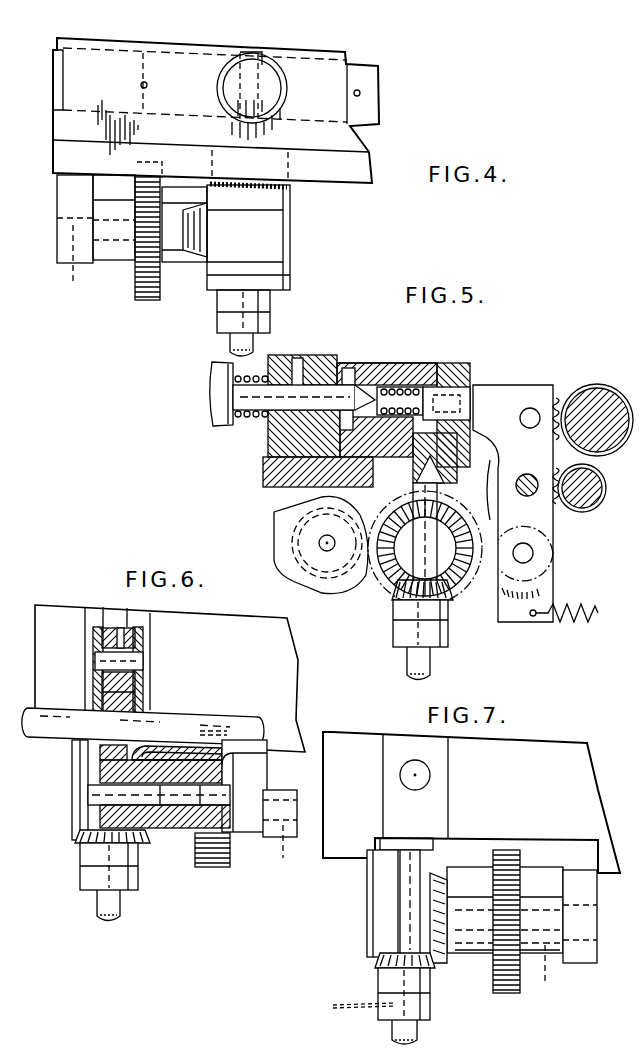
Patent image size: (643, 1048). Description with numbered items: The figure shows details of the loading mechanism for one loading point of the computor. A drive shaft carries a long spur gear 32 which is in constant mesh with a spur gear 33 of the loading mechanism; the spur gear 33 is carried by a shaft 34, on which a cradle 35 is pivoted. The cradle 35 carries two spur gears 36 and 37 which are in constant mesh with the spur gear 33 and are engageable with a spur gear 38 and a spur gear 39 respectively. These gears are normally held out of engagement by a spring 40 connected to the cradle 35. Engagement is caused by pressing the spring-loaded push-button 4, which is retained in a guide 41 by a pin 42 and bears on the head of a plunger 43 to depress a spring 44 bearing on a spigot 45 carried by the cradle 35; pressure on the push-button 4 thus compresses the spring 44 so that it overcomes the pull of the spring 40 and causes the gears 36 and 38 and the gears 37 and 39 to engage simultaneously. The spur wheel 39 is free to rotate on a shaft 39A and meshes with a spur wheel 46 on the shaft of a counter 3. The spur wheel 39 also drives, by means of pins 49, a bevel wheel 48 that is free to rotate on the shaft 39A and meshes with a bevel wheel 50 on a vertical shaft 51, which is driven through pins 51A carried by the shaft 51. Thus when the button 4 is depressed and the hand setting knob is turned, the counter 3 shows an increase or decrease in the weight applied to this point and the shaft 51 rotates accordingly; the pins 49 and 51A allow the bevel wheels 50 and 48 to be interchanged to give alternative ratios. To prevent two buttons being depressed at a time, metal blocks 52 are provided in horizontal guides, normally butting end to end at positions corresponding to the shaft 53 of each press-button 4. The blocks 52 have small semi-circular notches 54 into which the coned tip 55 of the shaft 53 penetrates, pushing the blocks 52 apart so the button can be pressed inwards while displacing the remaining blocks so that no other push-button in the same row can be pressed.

In FIG. 4, the counter 3 is at (263, 235).
In FIG. 5, the counter 3 is at (333, 584).
In FIG. 4, the push-button 4 is at (270, 80).
In FIG. 5, the push-button 4 is at (220, 388).
In FIG. 5, the long spur gear 32 is at (587, 505).
In FIG. 5, the spur gear 33 is at (556, 510).
In FIG. 6, the spur gear 33 is at (143, 697).
In FIG. 5, the shaft 34 is at (527, 476).
In FIG. 6, the shaft 34 is at (197, 727).
In FIG. 5, the cradle 35 is at (503, 397).
In FIG. 6, the cradle 35 is at (143, 655).
In FIG. 5, the spur gear 36 is at (561, 400).
In FIG. 6, the spur gear 36 is at (143, 638).
In FIG. 5, the spur gear 37 is at (555, 573).
In FIG. 6, the spur gear 37 is at (175, 826).
In FIG. 5, the spur gear 38 is at (603, 416).
In FIG. 4, the spur wheel 39 is at (142, 300).
In FIG. 5, the spur wheel 39 is at (468, 584).
In FIG. 6, the spur wheel 39 is at (208, 867).
In FIG. 7, the spur wheel 39 is at (510, 993).
In FIG. 4, the shaft 39A is at (75, 239).
In FIG. 6, the shaft 39A is at (279, 833).
In FIG. 7, the shaft 39A is at (565, 935).
In FIG. 5, the spring 40 is at (580, 630).
In FIG. 5, the guide 41 is at (327, 373).
In FIG. 5, the pin 42 is at (297, 376).
In FIG. 5, the plunger 43 is at (383, 392).
In FIG. 5, the spring 44 is at (405, 388).
In FIG. 5, the spigot 45 is at (450, 396).
In FIG. 4, the spur wheel 46 is at (162, 265).
In FIG. 5, the spur wheel 46 is at (339, 558).
In FIG. 5, the bevel wheel 48 is at (450, 592).
In FIG. 7, the bevel wheel 48 is at (437, 968).
In FIG. 7, the pins 49 is at (481, 952).
In FIG. 5, the bevel wheel 50 is at (407, 602).
In FIG. 6, the bevel wheel 50 is at (97, 846).
In FIG. 7, the bevel wheel 50 is at (382, 970).
In FIG. 4, the vertical shaft 51 is at (231, 344).
In FIG. 5, the vertical shaft 51 is at (410, 667).
In FIG. 6, the vertical shaft 51 is at (97, 908).
In FIG. 7, the vertical shaft 51 is at (392, 1032).
In FIG. 7, the pins 51A is at (347, 1005).
In FIG. 4, the metal block 52 is at (196, 72).
In FIG. 5, the metal block 52 is at (352, 368).
In FIG. 5, the shaft 53 is at (248, 412).
In FIG. 4, the semi-circular notch 54 is at (362, 93).
In FIG. 5, the coned tip 55 is at (366, 397).